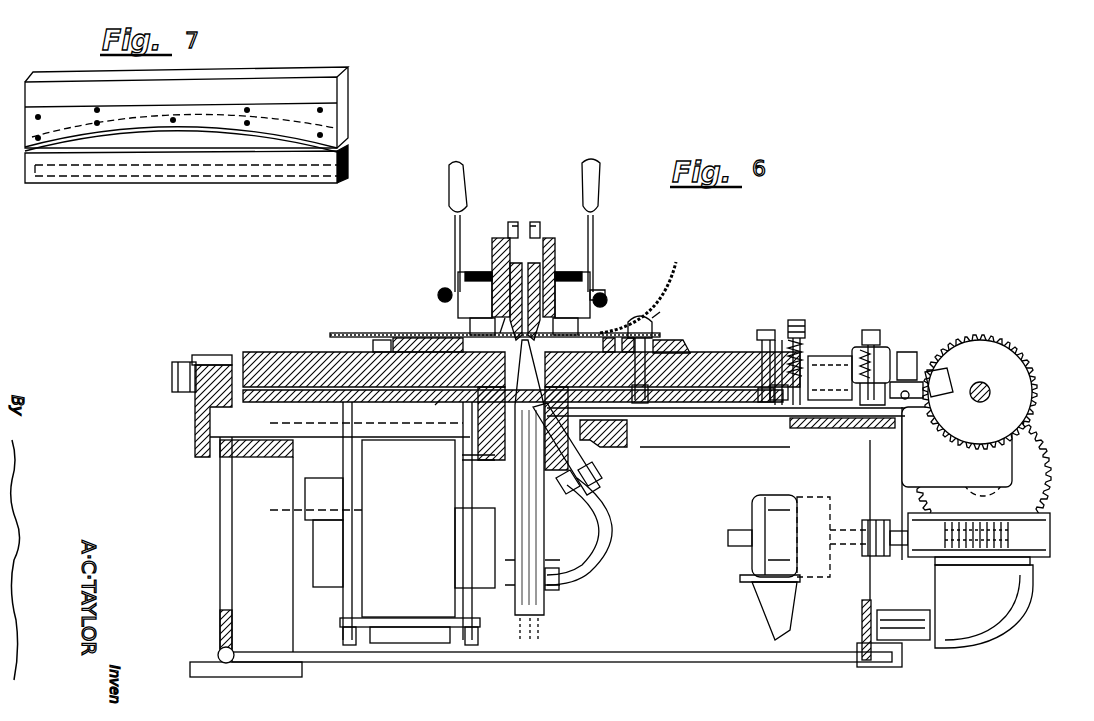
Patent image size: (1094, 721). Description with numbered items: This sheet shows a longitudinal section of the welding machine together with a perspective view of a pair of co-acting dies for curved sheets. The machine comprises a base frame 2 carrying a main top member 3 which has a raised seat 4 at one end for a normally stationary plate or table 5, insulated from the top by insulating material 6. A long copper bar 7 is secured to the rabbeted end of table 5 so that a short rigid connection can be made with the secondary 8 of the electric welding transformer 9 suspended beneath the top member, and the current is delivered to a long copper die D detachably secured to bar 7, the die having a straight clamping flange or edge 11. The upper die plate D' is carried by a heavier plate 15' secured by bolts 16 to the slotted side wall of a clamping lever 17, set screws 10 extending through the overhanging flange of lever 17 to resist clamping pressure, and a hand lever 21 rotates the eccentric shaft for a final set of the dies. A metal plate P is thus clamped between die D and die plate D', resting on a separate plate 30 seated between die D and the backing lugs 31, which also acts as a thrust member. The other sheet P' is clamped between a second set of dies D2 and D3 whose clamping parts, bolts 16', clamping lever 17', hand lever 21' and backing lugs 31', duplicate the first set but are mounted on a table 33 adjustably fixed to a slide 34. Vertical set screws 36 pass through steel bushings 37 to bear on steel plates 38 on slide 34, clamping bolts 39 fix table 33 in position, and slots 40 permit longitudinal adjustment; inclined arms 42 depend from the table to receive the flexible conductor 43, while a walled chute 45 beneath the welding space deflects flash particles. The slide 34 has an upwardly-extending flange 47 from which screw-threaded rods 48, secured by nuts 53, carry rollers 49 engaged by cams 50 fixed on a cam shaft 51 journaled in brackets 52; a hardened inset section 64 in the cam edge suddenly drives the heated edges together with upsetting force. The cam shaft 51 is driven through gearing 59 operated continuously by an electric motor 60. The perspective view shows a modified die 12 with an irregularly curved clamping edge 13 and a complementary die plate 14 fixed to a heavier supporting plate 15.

In FIG. 6, the base frame 2 is at (218, 474).
In FIG. 6, the main top member 3 is at (196, 425).
In FIG. 6, the raised seat 4 is at (266, 405).
In FIG. 6, the stationary plate or table 5 is at (285, 341).
In FIG. 6, the insulating material 6 is at (243, 350).
In FIG. 6, the copper bar 7 is at (435, 412).
In FIG. 6, the secondary 8 is at (462, 460).
In FIG. 6, the electric welding transformer 9 is at (382, 523).
In FIG. 6, the set screws 10 is at (516, 228).
In FIG. 6, the clamping flange or edge 11 is at (500, 330).
In FIG. 7, the modified die 12 is at (182, 183).
In FIG. 7, the irregularly curved clamping edge 13 is at (167, 131).
In FIG. 7, the complementary die plate 14 is at (345, 130).
In FIG. 7, the supporting plate 15 is at (205, 107).
In FIG. 6, the supporting plate 15 is at (488, 275).
In FIG. 6, the heavier plate 15' is at (564, 275).
In FIG. 6, the bolts 16 is at (457, 284).
In FIG. 6, the bolts 16' is at (591, 283).
In FIG. 6, the clamping lever 17 is at (500, 277).
In FIG. 6, the clamping lever 17' is at (549, 277).
In FIG. 6, the hand lever 21 is at (439, 227).
In FIG. 6, the hand lever 21' is at (607, 225).
In FIG. 6, the separate plate or thrust member 30 is at (400, 312).
In FIG. 6, the backing lugs 31 is at (394, 333).
In FIG. 6, the backing lugs 31' is at (651, 337).
In FIG. 6, the table 33 is at (735, 352).
In FIG. 6, the slide 34 is at (770, 325).
In FIG. 6, the vertical set screws 36 is at (830, 305).
In FIG. 6, the steel bushings 37 is at (838, 330).
In FIG. 6, the steel plates 38 is at (766, 402).
In FIG. 6, the clamping bolts 39 is at (720, 452).
In FIG. 6, the slots 40 is at (790, 318).
In FIG. 6, the inclined arms 42 is at (590, 486).
In FIG. 6, the flexible conductor 43 is at (605, 523).
In FIG. 6, the walled chute 45 is at (544, 532).
In FIG. 6, the upwardly-extending flange 47 is at (832, 355).
In FIG. 6, the screw-threaded rods 48 is at (888, 360).
In FIG. 6, the rollers 49 is at (912, 398).
In FIG. 6, the cams 50 is at (945, 445).
In FIG. 6, the cam shaft 51 is at (990, 398).
In FIG. 6, the brackets 52 is at (983, 475).
In FIG. 6, the nuts 53 is at (866, 360).
In FIG. 6, the gearing 59 is at (975, 335).
In FIG. 6, the electric motor 60 is at (818, 567).
In FIG. 6, the hardened inset section 64 is at (947, 380).
In FIG. 6, the metal plate or sheet P is at (495, 325).
In FIG. 6, the sheet P' is at (653, 297).
In FIG. 6, the lower die D is at (480, 322).
In FIG. 6, the upper die plate D' is at (431, 291).
In FIG. 6, the lower die D2 is at (606, 302).
In FIG. 6, the upper die D3 is at (606, 287).